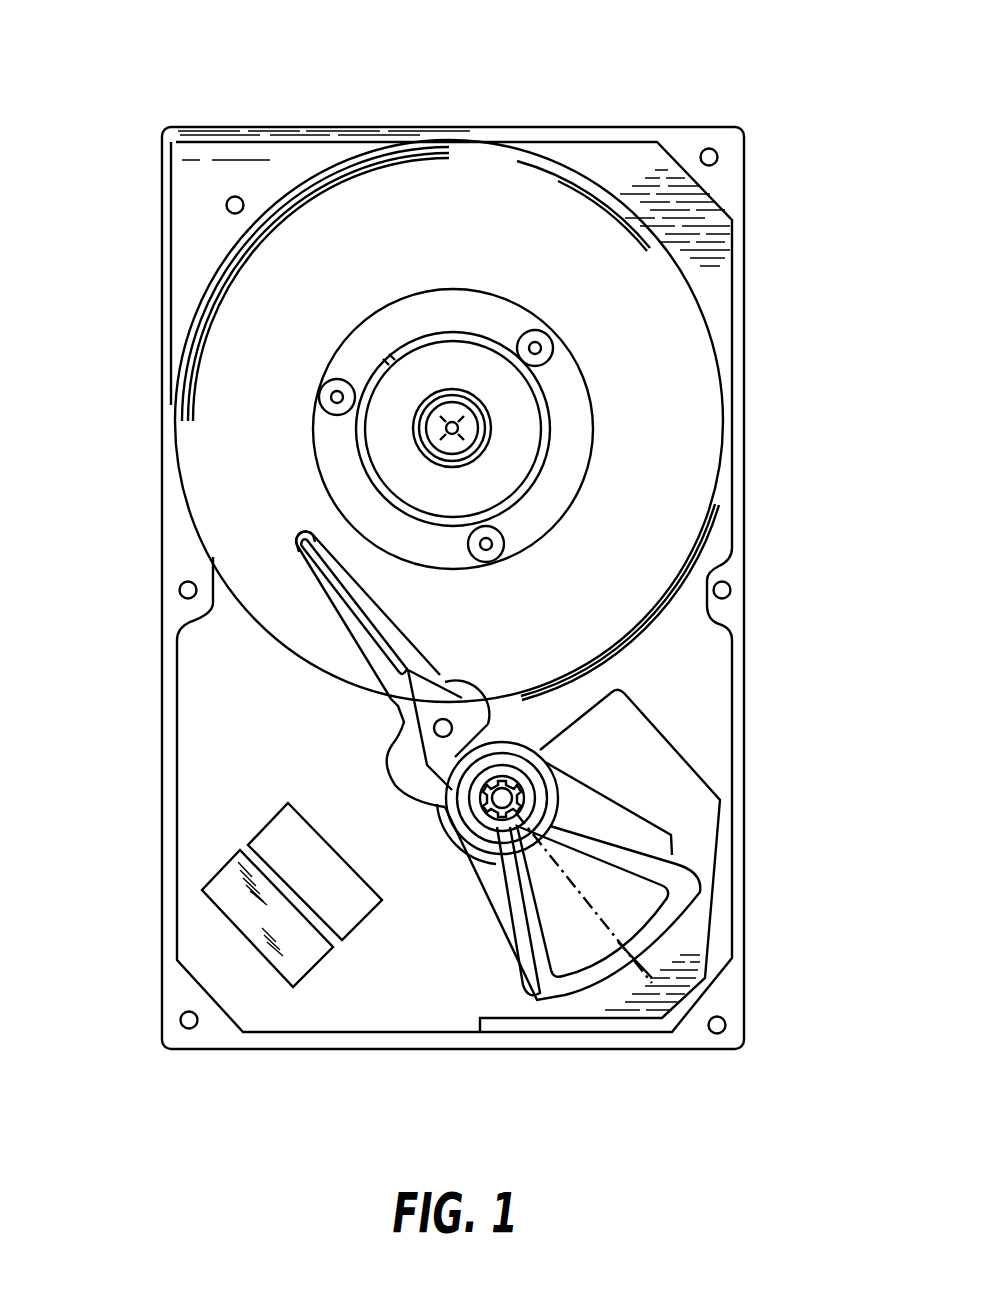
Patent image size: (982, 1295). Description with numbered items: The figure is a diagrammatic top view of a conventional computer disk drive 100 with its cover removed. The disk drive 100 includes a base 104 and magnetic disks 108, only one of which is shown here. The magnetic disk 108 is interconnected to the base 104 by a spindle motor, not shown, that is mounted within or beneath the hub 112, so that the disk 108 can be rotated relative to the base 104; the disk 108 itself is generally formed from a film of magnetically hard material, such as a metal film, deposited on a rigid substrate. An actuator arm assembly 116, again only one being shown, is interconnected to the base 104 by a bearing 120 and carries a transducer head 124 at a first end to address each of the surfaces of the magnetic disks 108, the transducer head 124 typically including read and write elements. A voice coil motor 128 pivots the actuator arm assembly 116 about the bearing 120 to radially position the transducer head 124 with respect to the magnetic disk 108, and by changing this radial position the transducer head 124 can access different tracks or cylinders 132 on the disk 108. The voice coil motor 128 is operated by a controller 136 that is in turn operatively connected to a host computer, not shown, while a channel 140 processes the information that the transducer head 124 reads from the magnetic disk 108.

The disk drive 100 is at (460, 107).
The base 104 is at (715, 668).
The magnetic disk 108 is at (695, 396).
The hub 112 is at (434, 442).
The actuator arm assembly 116 is at (338, 616).
The bearing 120 is at (500, 806).
The transducer head 124 is at (298, 542).
The voice coil motor 128 is at (563, 983).
The tracks or cylinders 132 is at (705, 487).
The controller 136 is at (247, 929).
The channel 140 is at (262, 824).